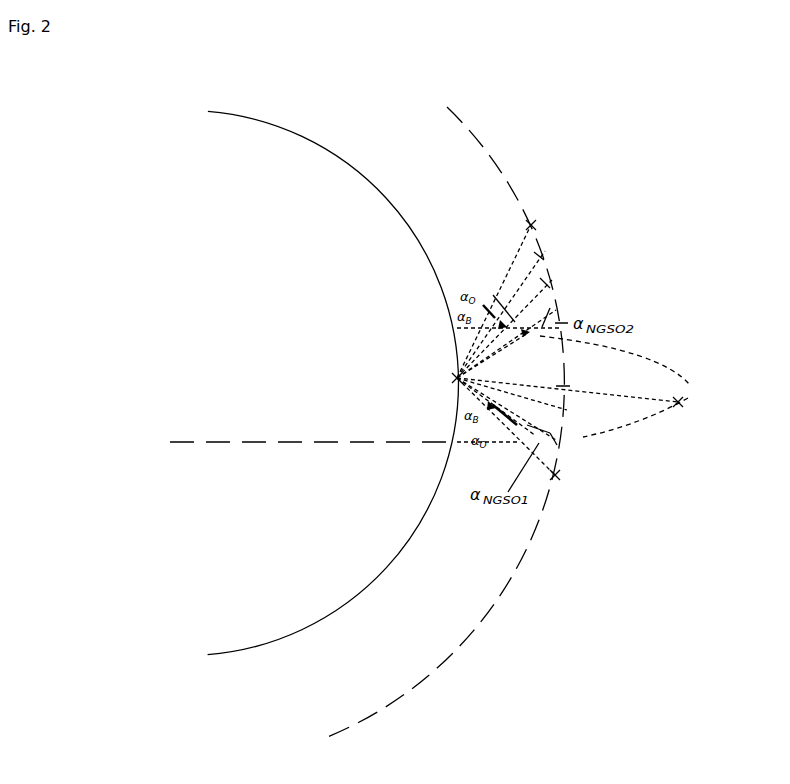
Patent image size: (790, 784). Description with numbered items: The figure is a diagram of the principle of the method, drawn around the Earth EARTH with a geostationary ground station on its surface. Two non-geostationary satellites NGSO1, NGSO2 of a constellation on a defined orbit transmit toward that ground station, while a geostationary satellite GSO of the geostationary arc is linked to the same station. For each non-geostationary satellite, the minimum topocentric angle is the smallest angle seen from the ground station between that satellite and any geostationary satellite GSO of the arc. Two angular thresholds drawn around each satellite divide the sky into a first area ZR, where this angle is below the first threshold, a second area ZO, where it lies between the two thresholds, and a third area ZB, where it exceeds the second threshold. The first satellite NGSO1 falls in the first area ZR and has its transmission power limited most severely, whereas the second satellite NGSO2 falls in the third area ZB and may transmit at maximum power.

The Earth EARTH is at (315, 382).
The geostationary satellite GSO is at (596, 382).
The second non-geostationary satellite NGSO2 is at (534, 288).
The first non-geostationary satellite NGSO1 is at (548, 436).
The first area ZR is at (546, 245).
The second area ZO is at (552, 273).
The third area ZB is at (550, 313).